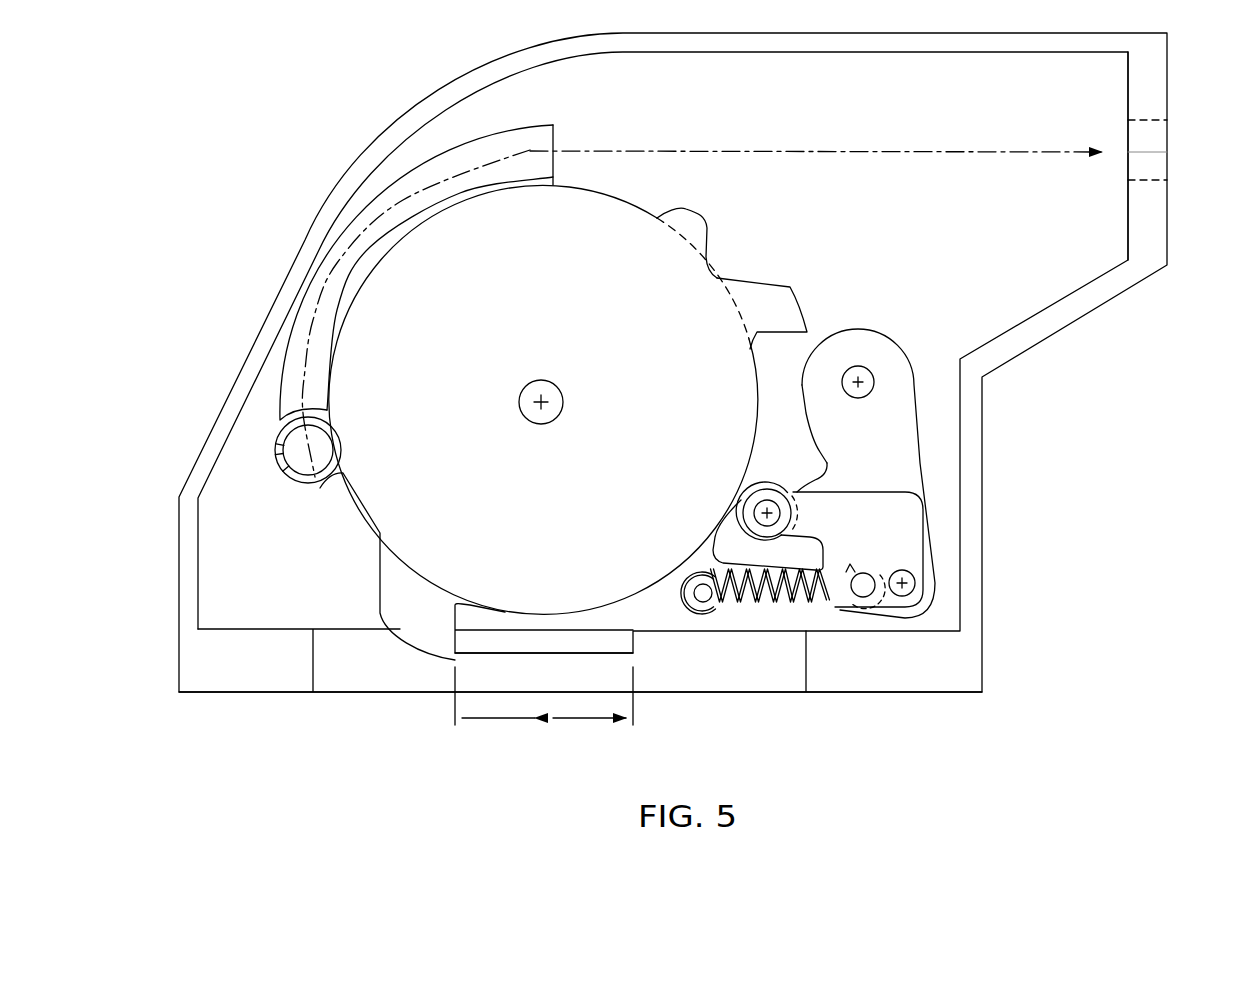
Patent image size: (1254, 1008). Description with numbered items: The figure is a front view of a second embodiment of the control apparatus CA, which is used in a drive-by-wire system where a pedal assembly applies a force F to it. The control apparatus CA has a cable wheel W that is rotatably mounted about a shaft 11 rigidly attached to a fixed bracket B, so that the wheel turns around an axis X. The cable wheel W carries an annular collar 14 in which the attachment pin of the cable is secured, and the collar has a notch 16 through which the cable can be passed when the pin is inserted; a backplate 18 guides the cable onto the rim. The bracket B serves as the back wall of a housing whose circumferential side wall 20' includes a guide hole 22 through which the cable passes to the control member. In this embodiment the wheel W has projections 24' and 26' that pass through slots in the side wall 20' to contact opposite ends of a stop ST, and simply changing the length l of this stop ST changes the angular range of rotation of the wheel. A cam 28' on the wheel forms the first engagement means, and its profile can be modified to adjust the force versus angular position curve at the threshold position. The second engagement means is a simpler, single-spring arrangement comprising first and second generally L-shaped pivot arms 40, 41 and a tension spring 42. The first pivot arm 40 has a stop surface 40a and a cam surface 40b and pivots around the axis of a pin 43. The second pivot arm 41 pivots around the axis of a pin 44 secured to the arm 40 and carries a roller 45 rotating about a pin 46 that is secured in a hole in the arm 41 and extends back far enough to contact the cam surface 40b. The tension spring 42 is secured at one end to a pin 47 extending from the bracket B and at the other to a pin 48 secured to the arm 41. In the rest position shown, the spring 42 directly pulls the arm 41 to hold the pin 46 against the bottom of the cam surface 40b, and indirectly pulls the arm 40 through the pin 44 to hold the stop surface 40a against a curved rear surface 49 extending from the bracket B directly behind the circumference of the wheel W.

The shaft 11 is at (532, 394).
The annular collar 14 is at (300, 484).
The notch 16 is at (273, 462).
The backplate 18 is at (517, 142).
The circumferential side wall 20' is at (580, 660).
The guide hole 22 is at (1140, 120).
The projection 24' is at (387, 566).
The projection 26' is at (762, 313).
The cam 28' is at (717, 231).
The first pivot arm 40 is at (889, 457).
The stop surface 40a is at (720, 529).
The cam surface 40b is at (804, 477).
The second pivot arm 41 is at (879, 540).
The tension spring 42 is at (762, 603).
The pin 43 is at (864, 366).
The pin 44 is at (917, 584).
The roller 45 is at (750, 488).
The pin 46 is at (752, 513).
The pin 47 is at (698, 595).
The pin 48 is at (858, 608).
The curved rear surface 49 is at (726, 306).
The cable wheel W is at (620, 490).
The axis X is at (545, 420).
The stop ST is at (530, 645).
The force F is at (1085, 152).
The control apparatus CA is at (1022, 514).
The bracket B is at (906, 262).
The length l is at (544, 702).